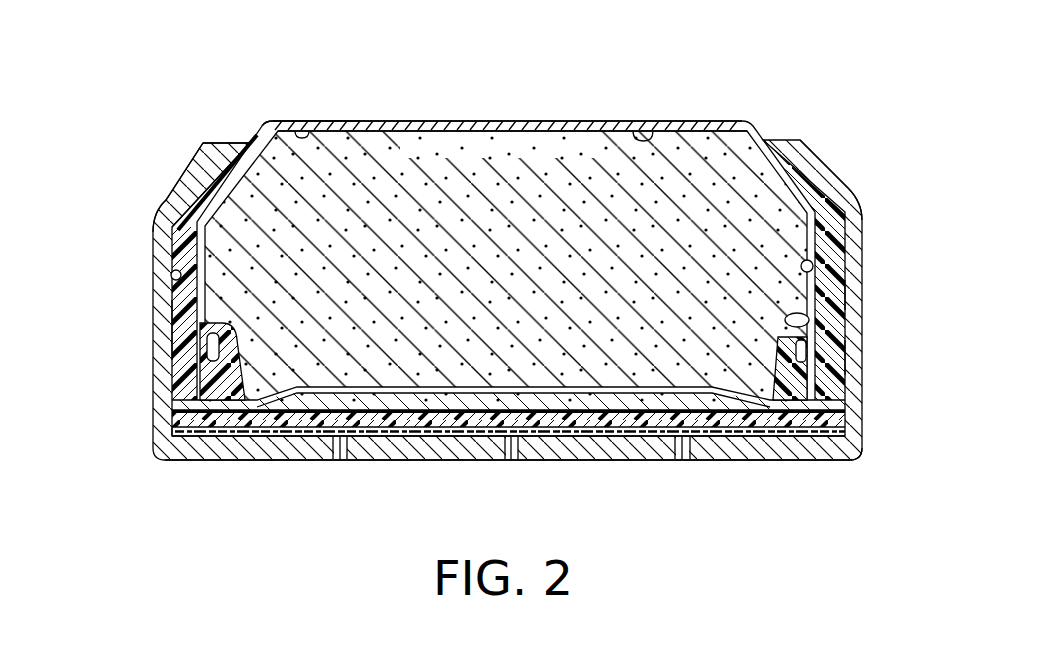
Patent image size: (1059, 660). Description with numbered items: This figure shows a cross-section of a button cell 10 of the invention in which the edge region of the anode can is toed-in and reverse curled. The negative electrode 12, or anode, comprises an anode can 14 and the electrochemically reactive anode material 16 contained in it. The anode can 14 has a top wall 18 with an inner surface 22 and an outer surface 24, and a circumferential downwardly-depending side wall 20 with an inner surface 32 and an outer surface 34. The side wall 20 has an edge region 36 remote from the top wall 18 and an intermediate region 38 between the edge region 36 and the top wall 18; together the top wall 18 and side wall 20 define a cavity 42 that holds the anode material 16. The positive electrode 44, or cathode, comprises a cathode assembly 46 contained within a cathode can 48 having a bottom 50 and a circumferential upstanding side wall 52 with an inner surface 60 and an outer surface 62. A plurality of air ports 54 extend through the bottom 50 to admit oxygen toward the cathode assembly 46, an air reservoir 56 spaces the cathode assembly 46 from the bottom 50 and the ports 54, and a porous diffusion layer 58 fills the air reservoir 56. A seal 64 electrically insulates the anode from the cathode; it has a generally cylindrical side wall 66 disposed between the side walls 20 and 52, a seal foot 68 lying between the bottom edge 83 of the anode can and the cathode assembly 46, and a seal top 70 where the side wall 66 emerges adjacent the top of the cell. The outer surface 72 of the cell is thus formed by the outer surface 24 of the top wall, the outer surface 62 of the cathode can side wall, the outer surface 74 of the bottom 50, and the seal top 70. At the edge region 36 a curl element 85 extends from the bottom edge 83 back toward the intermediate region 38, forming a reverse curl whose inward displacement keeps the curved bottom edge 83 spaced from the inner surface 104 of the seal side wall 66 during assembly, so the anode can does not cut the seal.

The cell 10 is at (786, 92).
The negative electrode 12 is at (466, 119).
The anode can 14 is at (552, 119).
The anode material 16 is at (410, 165).
The top wall 18 is at (619, 119).
The side wall 20 is at (857, 200).
The inner surface 22 is at (313, 133).
The outer surface 24 is at (350, 124).
The inner surface 32 is at (840, 258).
The outer surface 34 is at (840, 297).
The edge region 36 is at (838, 363).
The intermediate region 38 is at (838, 250).
The cavity 42 is at (650, 131).
The positive electrode 44 is at (239, 465).
The cathode assembly 46 is at (382, 441).
The cathode can 48 is at (472, 463).
The bottom 50 is at (771, 468).
The side wall 52 is at (149, 238).
The air ports 54 is at (510, 461).
The air reservoir 56 is at (290, 445).
The porous diffusion layer 58 is at (627, 461).
The inner surface 60 is at (177, 275).
The outer surface 62 is at (153, 311).
The seal 64 is at (167, 200).
The side wall 66 is at (173, 342).
The seal foot 68 is at (173, 432).
The seal top 70 is at (233, 143).
The outer surface 72 is at (171, 164).
The outer surface 74 is at (362, 461).
The bottom edge 83 is at (177, 395).
The curl element 85 is at (177, 383).
The inner surface 104 is at (833, 320).